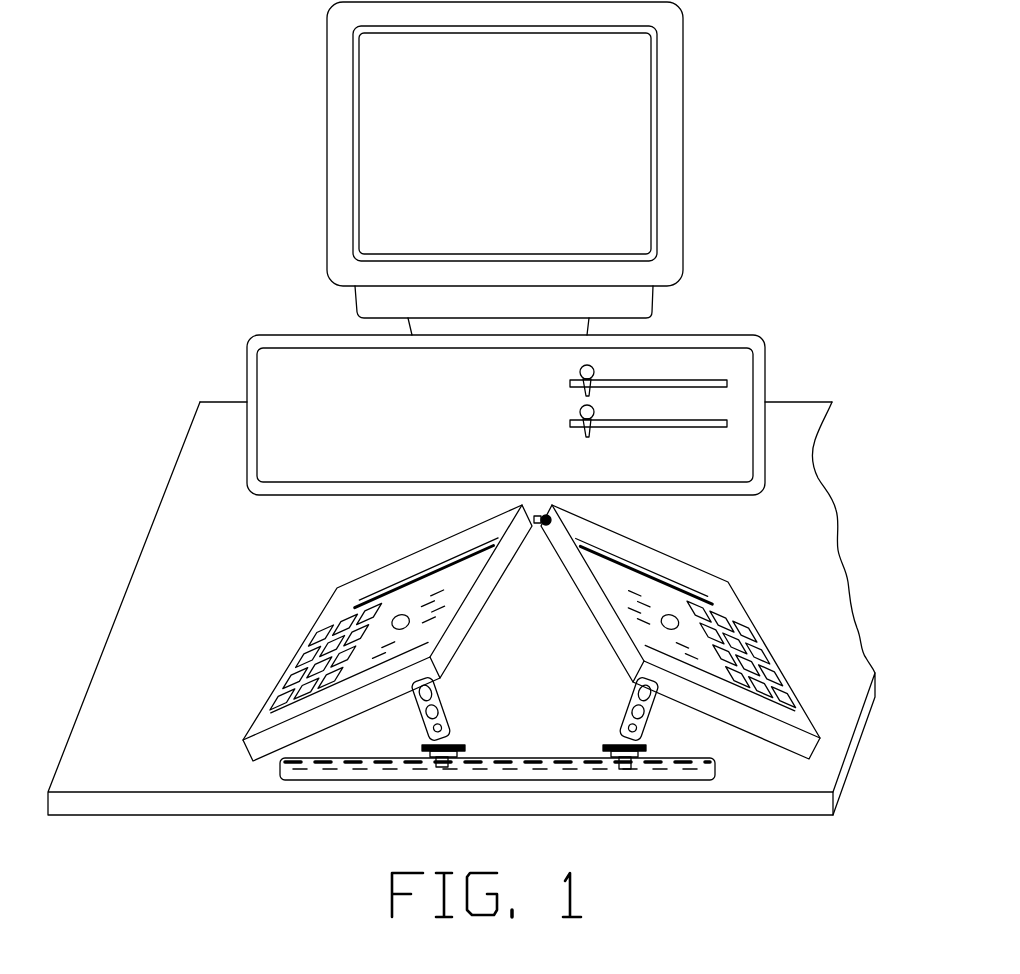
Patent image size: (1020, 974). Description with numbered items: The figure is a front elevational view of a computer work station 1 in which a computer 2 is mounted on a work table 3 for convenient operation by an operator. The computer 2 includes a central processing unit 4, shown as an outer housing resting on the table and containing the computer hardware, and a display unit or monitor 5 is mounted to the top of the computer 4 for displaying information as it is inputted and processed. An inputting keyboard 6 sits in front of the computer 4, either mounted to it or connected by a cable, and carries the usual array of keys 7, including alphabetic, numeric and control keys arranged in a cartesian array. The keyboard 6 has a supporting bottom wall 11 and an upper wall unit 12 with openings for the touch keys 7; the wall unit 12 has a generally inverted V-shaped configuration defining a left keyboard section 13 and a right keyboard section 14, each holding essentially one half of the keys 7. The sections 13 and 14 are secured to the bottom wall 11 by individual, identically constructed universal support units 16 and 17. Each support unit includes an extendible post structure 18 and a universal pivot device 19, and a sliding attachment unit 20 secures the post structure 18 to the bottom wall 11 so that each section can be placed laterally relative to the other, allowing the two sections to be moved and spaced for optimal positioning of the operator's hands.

The computer work station 1 is at (851, 213).
The central processing unit 2 is at (740, 290).
The work table 3 is at (757, 802).
The central processing unit 4 is at (768, 364).
The display unit or monitor 5 is at (688, 101).
The inputting keyboard 6 is at (768, 620).
The keys 7 is at (372, 594).
The supporting bottom wall 11 is at (719, 768).
The upper wall unit 12 is at (603, 617).
The left keyboard section 13 is at (460, 545).
The right keyboard section 14 is at (636, 541).
The universal support unit 16 is at (450, 696).
The universal support unit 17 is at (617, 702).
The extendible post structure 18 is at (647, 733).
The universal pivot device 19 is at (599, 750).
The sliding attachment unit 20 is at (631, 771).